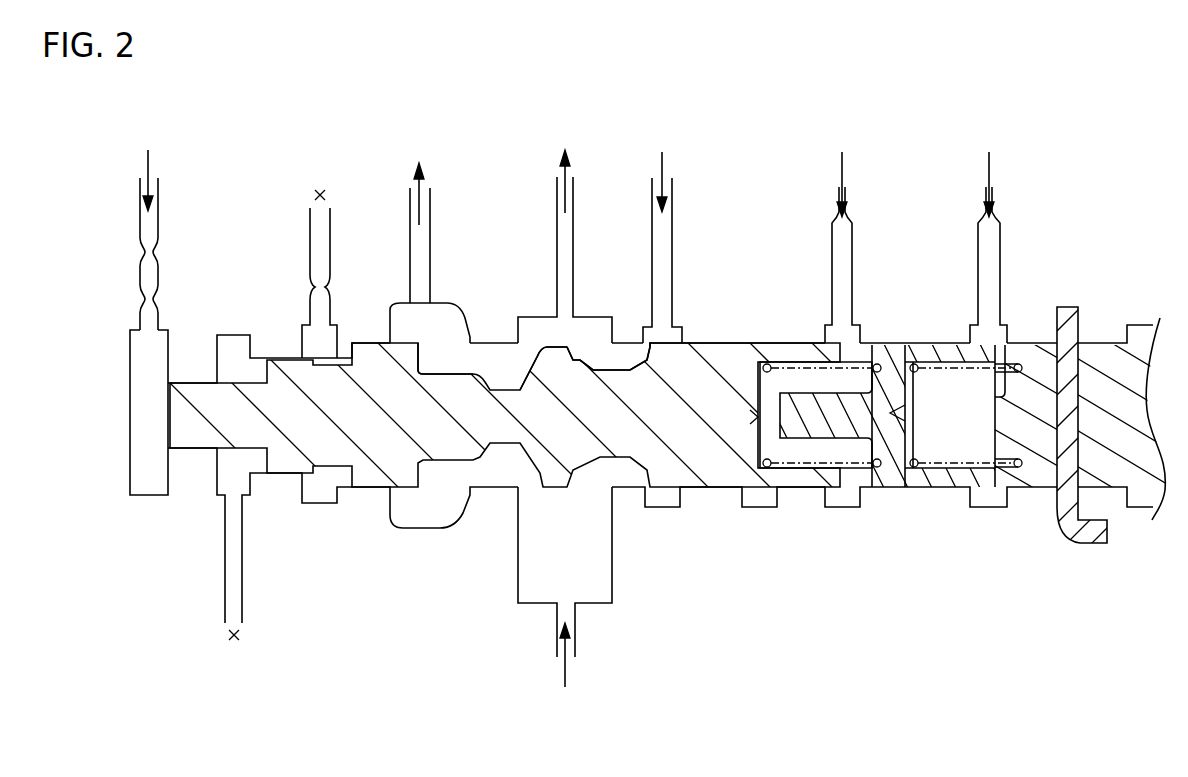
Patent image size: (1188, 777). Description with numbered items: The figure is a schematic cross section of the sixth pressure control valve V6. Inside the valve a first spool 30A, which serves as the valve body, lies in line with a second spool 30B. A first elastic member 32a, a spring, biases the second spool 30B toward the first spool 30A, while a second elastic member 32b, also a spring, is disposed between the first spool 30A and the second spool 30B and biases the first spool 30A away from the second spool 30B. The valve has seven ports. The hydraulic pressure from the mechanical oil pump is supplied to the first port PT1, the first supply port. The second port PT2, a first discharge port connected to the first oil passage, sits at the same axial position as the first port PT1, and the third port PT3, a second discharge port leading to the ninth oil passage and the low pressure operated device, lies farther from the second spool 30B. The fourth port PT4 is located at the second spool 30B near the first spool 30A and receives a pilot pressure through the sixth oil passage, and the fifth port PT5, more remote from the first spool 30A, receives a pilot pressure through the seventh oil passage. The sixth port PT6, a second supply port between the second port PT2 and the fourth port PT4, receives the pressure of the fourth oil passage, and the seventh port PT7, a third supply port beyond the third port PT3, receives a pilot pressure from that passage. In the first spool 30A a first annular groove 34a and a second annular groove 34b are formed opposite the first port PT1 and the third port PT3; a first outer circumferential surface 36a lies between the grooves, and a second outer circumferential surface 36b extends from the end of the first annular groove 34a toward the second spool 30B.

The sixth pressure control valve V6 is at (85, 150).
The first port PT1 is at (613, 583).
The second port PT2 is at (522, 317).
The third port PT3 is at (392, 310).
The fourth port PT4 is at (853, 240).
The fifth port PT5 is at (978, 262).
The sixth port PT6 is at (673, 333).
The seventh port PT7 is at (157, 312).
The first spool 30A is at (708, 462).
The second spool 30B is at (895, 480).
The first elastic member 32a is at (915, 487).
The second elastic member 32b is at (770, 468).
The first annular groove 34a is at (593, 343).
The second annular groove 34b is at (500, 388).
The first outer circumferential surface 36a is at (552, 343).
The second outer circumferential surface 36b is at (658, 343).